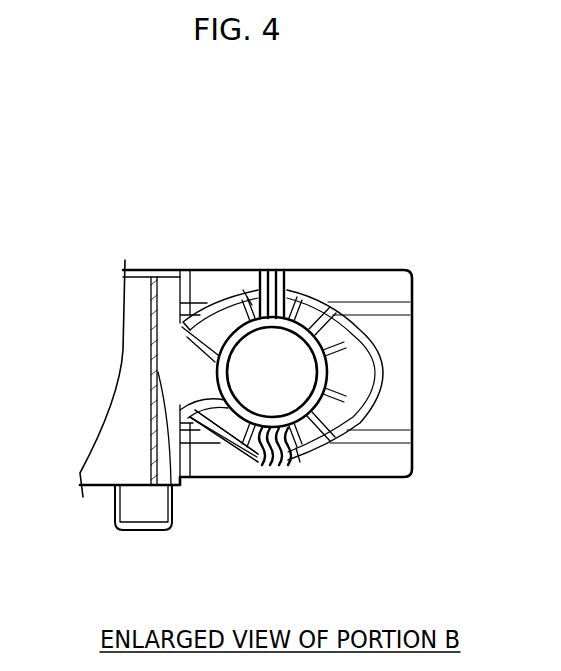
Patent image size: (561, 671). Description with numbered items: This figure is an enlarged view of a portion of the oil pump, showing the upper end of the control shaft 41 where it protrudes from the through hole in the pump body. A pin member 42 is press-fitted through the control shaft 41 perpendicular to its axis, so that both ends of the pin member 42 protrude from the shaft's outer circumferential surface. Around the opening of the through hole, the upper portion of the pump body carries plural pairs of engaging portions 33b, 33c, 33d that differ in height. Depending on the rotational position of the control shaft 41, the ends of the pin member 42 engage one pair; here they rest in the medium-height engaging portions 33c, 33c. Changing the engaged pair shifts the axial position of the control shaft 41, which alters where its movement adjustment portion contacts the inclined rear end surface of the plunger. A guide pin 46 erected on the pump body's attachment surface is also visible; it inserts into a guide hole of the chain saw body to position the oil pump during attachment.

The control shaft 41 is at (300, 373).
The pin member 42 is at (277, 285).
The engaging portions 33b is at (322, 332).
The engaging portions 33c is at (243, 285).
The engaging portions 33d is at (212, 340).
The guide pins 46 is at (115, 513).